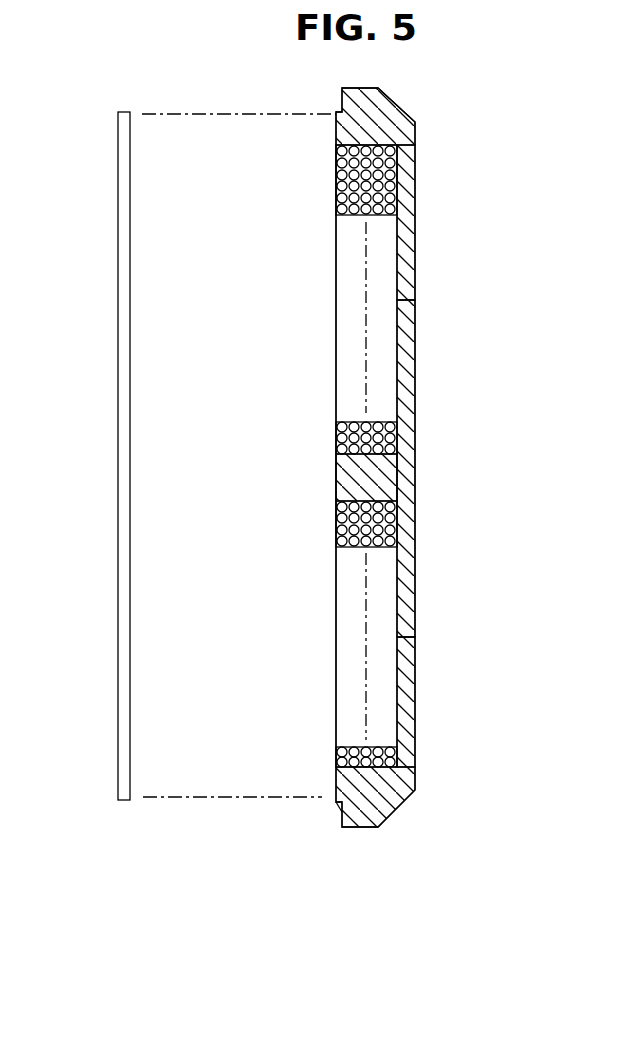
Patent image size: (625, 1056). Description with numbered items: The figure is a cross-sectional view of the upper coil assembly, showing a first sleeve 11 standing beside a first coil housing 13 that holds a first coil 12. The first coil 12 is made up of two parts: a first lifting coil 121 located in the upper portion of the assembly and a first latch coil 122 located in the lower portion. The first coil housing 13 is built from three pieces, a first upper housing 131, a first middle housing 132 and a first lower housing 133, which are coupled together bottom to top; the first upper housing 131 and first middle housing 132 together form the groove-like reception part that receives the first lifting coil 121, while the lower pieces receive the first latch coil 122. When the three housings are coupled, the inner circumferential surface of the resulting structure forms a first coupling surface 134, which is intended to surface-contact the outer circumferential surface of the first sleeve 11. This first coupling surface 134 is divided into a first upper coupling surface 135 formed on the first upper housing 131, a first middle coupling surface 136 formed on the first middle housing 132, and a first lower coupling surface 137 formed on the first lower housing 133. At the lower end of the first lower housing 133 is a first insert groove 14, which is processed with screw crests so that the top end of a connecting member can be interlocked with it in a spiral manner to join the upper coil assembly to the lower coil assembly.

The first sleeve 11 is at (118, 455).
The first coil 12 is at (420, 517).
The first lifting coil 121 is at (383, 403).
The first latch coil 122 is at (377, 727).
The first coil housing 13 is at (503, 222).
The first upper housing 131 is at (400, 234).
The first middle housing 132 is at (403, 477).
The first lower housing 133 is at (405, 692).
The first coupling surface 134 is at (257, 137).
The first upper coupling surface 135 is at (336, 141).
The first middle coupling surface 136 is at (336, 481).
The first lower coupling surface 137 is at (336, 776).
The first insert groove 14 is at (342, 815).